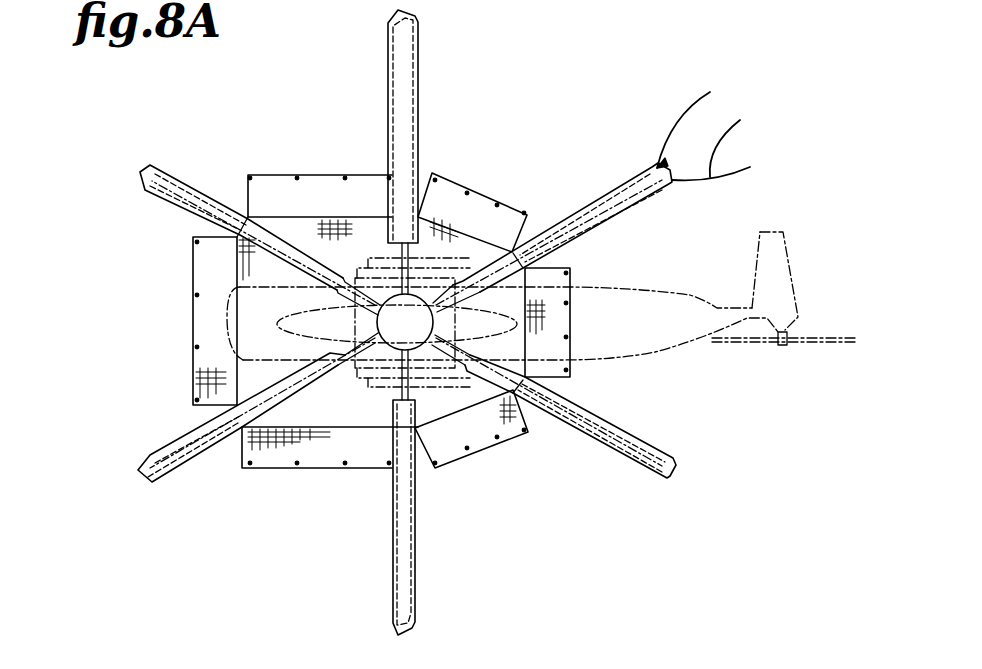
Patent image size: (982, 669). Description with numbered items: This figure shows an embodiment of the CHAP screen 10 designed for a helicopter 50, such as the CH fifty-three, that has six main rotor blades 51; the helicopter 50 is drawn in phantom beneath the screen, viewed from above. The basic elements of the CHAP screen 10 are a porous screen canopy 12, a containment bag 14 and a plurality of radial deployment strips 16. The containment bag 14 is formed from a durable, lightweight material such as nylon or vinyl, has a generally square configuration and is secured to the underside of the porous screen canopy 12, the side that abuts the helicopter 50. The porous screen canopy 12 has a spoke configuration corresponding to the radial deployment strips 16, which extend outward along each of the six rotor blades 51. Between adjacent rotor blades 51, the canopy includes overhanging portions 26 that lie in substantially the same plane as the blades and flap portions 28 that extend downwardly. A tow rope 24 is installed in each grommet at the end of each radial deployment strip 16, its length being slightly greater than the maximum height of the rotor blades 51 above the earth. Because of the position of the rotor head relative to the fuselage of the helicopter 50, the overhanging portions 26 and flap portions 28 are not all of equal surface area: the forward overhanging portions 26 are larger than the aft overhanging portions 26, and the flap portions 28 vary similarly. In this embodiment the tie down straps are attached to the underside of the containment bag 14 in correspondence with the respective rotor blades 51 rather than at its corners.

The CHAP screen 10 is at (502, 150).
The porous screen canopy 12 is at (192, 372).
The containment bag 14 is at (388, 368).
The radial deployment strip 16 is at (593, 425).
The tow rope 24 is at (710, 93).
The overhanging portion 26 is at (362, 228).
The flap portion 28 is at (303, 189).
The helicopter 50 is at (672, 280).
The main rotor blade 51 is at (184, 174).